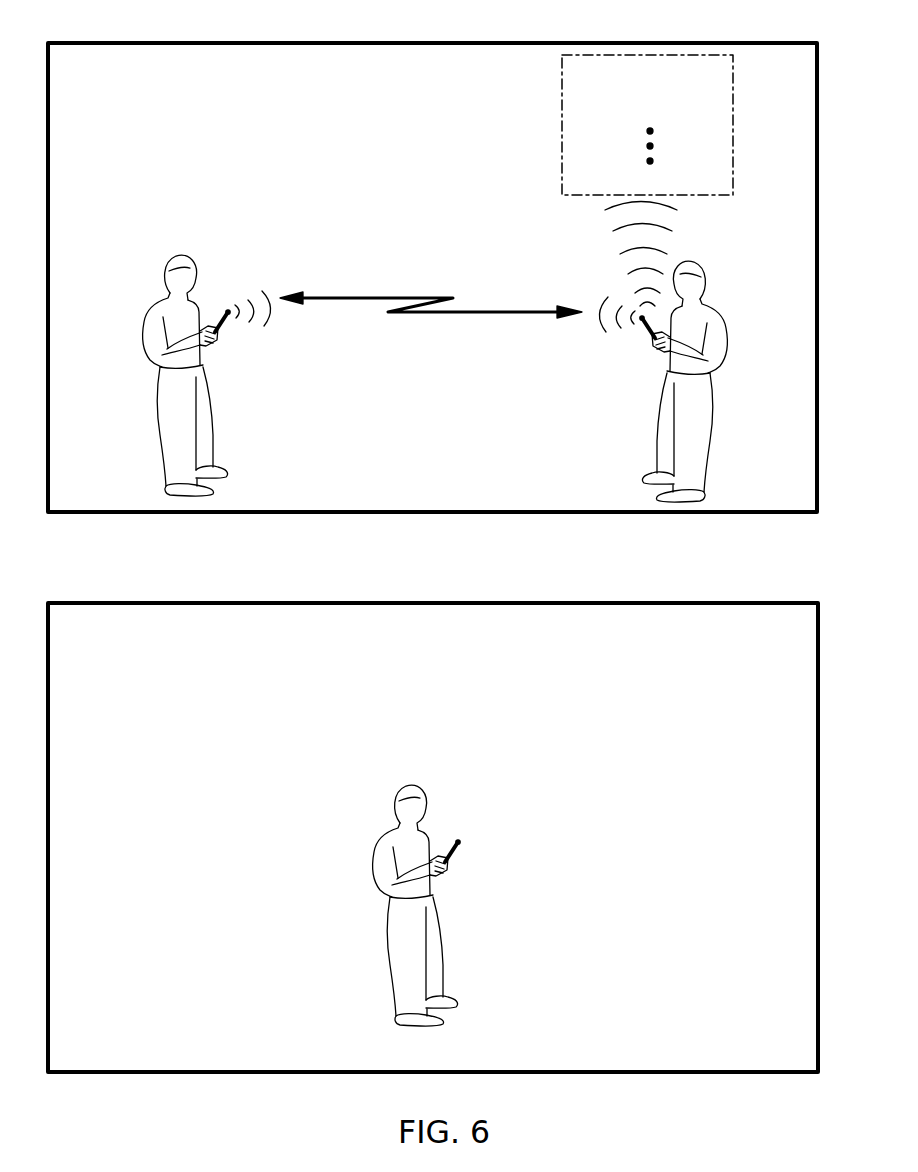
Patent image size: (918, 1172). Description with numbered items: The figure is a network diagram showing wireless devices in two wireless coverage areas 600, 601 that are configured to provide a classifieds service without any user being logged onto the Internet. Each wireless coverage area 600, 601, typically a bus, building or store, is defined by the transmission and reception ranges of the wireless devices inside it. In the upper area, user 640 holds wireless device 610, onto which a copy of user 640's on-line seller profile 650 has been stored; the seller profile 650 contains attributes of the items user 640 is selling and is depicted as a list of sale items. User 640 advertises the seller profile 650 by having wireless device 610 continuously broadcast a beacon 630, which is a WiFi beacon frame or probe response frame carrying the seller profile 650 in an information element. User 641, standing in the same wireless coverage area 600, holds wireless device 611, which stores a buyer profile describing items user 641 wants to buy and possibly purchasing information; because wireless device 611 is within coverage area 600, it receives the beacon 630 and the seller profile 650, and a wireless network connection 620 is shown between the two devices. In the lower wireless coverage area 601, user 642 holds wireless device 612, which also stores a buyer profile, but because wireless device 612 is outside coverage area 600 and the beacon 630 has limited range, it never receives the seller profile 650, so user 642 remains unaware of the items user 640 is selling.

The wireless coverage area 600 is at (727, 43).
The wireless coverage area 601 is at (727, 602).
The wireless device 610 is at (643, 330).
The wireless device 611 is at (225, 325).
The wireless device 612 is at (457, 848).
The wireless network connection 620 is at (370, 297).
The beacon 630 is at (680, 223).
The user 640 is at (720, 307).
The user 641 is at (152, 298).
The user 642 is at (385, 830).
The seller profile 650 is at (562, 118).